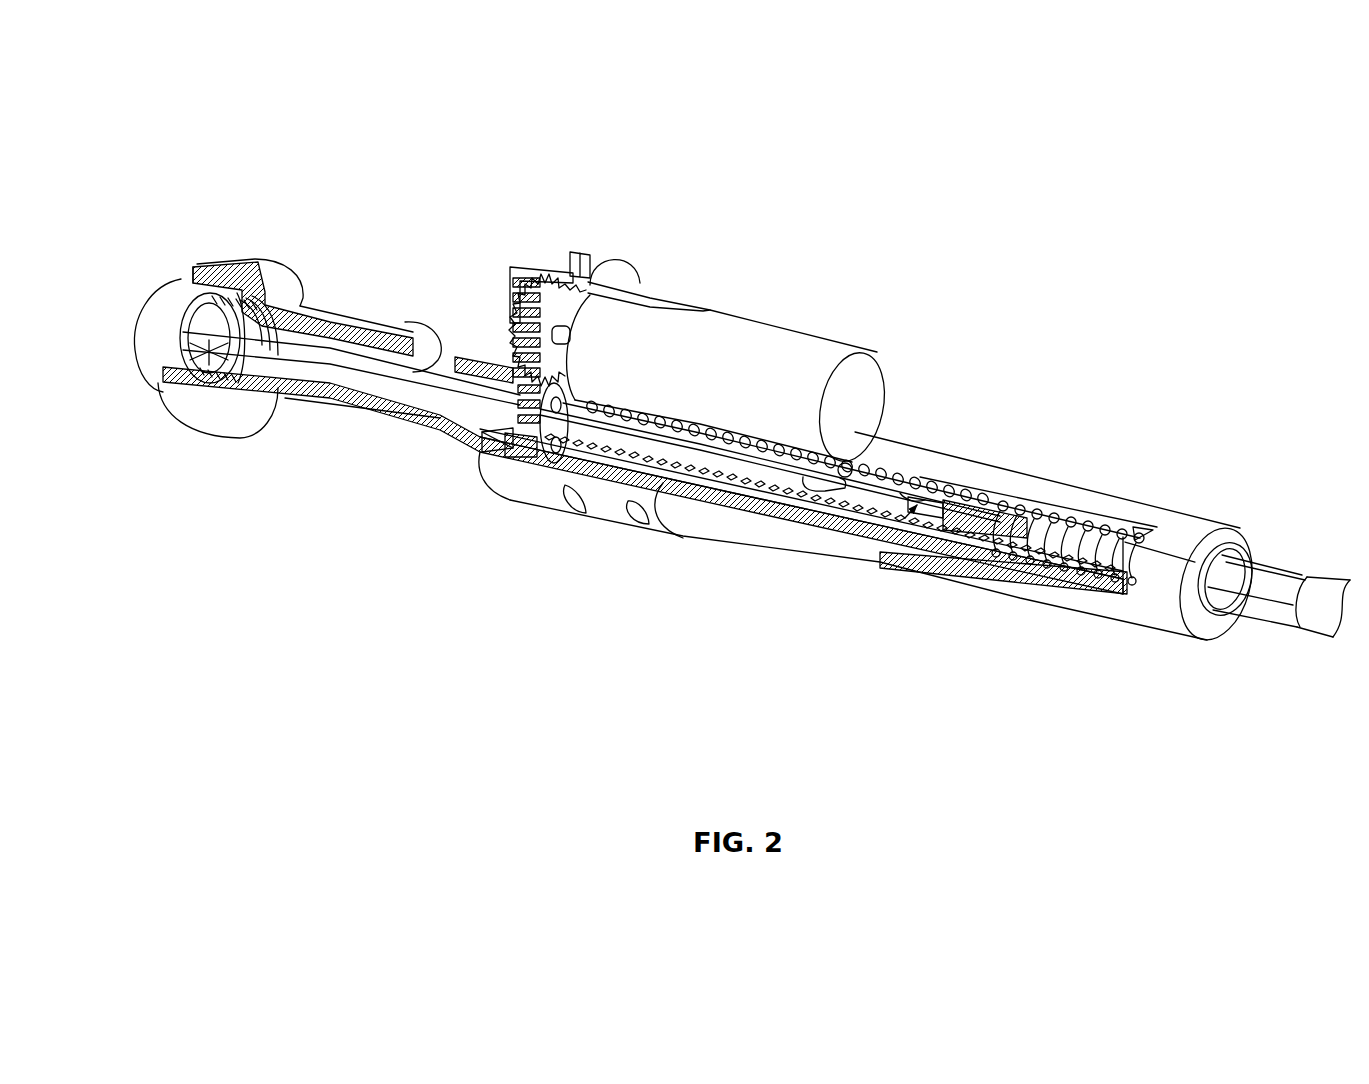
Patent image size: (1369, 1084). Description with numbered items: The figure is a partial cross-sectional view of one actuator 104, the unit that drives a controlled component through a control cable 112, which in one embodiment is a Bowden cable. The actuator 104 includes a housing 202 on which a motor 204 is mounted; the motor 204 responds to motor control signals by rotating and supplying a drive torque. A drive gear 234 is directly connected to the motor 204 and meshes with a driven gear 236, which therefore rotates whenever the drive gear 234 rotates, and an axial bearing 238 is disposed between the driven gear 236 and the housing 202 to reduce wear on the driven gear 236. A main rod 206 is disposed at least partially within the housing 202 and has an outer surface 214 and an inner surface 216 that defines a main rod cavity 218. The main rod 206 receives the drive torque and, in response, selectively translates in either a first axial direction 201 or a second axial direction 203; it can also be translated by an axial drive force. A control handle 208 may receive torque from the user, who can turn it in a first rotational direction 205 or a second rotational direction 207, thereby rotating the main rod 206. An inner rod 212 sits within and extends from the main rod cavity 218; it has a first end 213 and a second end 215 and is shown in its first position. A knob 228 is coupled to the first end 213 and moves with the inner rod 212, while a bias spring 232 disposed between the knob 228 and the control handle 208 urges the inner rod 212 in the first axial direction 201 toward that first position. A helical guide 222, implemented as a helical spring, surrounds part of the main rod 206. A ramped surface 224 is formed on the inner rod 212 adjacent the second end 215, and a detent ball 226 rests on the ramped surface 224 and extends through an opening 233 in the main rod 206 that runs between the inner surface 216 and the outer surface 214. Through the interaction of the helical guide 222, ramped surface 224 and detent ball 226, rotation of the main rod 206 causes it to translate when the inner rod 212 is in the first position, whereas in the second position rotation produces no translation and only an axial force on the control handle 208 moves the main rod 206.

The actuator 104 is at (1042, 294).
The control cable 112 is at (1090, 580).
The first axial direction 201 is at (232, 602).
The housing 202 is at (578, 512).
The second axial direction 203 is at (765, 727).
The motor 204 is at (778, 330).
The first rotational direction 205 is at (163, 457).
The main rod 206 is at (413, 417).
The second rotational direction 207 is at (222, 228).
The control handle 208 is at (253, 262).
The inner rod 212 is at (790, 480).
The first end 213 is at (178, 342).
The outer surface 214 is at (973, 493).
The second end 215 is at (922, 505).
The inner surface 216 is at (928, 500).
The main rod cavity 218 is at (907, 513).
The helical guide 222 is at (1033, 510).
The ramped surface 224 is at (847, 483).
The detent ball 226 is at (855, 465).
The knob 228 is at (150, 333).
The bias spring 232 is at (237, 295).
The opening 233 is at (843, 478).
The drive gear 234 is at (550, 278).
The driven gear 236 is at (505, 457).
The axial bearing 238 is at (513, 463).